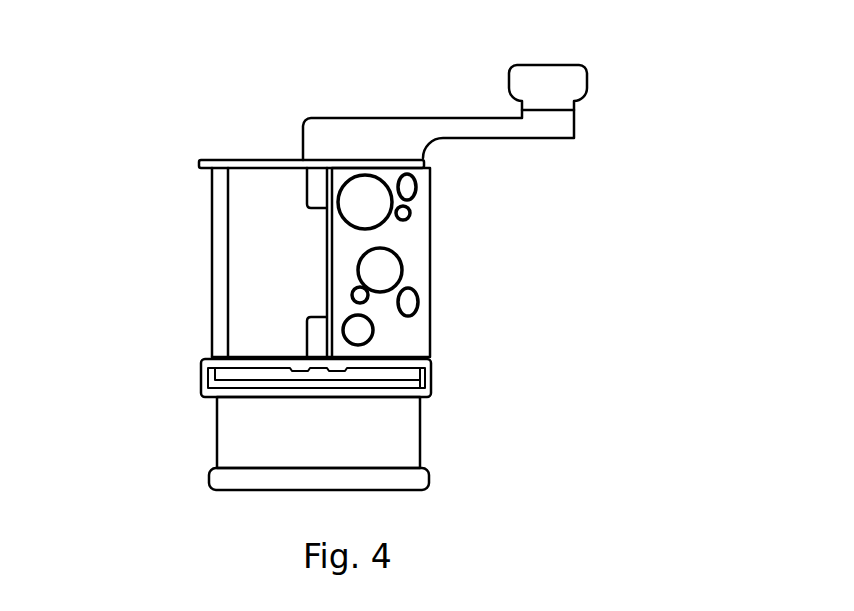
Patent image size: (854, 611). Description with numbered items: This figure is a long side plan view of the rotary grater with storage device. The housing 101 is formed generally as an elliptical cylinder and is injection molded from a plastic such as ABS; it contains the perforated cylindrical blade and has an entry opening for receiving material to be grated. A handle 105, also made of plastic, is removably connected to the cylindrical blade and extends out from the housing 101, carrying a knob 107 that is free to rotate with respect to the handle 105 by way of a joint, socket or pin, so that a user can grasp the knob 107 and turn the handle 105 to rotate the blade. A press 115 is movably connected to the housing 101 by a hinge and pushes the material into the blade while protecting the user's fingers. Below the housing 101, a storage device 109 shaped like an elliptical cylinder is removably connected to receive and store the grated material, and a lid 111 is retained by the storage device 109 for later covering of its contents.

The housing 101 is at (432, 253).
The handle 105 is at (453, 125).
The knob 107 is at (562, 78).
The storage device 109 is at (422, 435).
The lid 111 is at (429, 487).
The press 115 is at (253, 288).